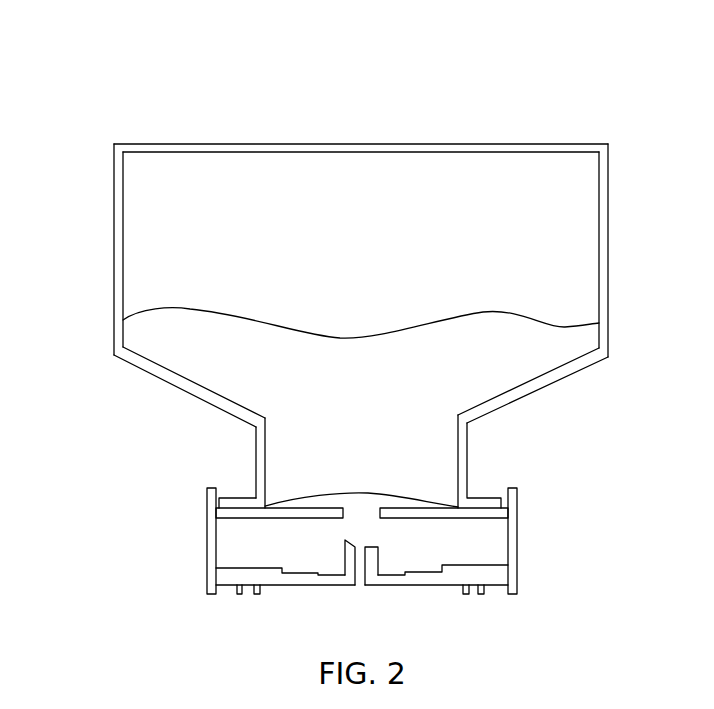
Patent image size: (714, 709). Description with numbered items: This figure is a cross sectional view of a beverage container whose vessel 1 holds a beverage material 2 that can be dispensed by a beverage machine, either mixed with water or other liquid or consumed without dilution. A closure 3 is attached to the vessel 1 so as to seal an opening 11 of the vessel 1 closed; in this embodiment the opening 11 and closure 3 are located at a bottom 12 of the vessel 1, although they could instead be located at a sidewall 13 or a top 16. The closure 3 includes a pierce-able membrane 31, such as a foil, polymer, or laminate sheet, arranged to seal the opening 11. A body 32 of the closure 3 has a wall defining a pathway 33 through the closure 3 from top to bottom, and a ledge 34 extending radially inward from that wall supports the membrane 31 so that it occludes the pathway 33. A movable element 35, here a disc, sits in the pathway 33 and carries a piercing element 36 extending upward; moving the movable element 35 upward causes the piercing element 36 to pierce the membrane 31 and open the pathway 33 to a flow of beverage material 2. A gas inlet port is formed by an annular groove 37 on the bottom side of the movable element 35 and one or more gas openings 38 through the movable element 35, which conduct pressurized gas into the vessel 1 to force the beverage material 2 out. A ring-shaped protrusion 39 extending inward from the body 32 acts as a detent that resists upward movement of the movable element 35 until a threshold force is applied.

The vessel 1 is at (63, 144).
The beverage material 2 is at (577, 347).
The closure 3 is at (169, 544).
The opening 11 is at (283, 498).
The bottom 12 is at (562, 378).
The sidewall 13 is at (607, 190).
The top 16 is at (388, 144).
The pierce-able membrane 31 is at (362, 494).
The closure body 32 is at (466, 452).
The pathway 33 is at (242, 559).
The ledge 34 is at (265, 519).
The movable element 35 is at (430, 586).
The piercing element 36 is at (380, 566).
The annular groove 37 is at (248, 594).
The gas openings 38 is at (473, 595).
The protrusion 39 is at (503, 566).